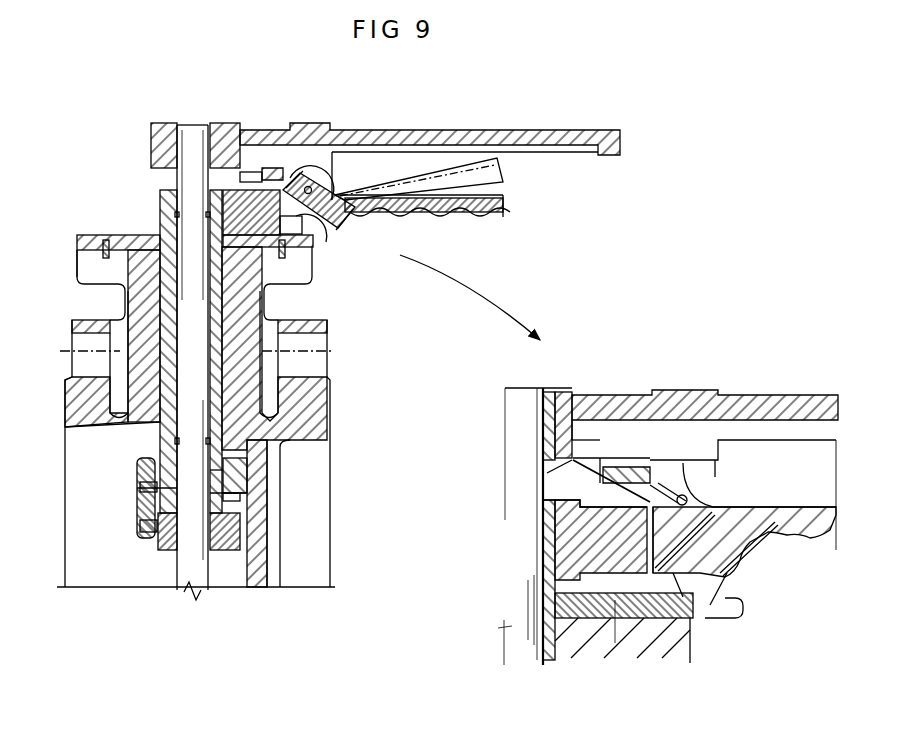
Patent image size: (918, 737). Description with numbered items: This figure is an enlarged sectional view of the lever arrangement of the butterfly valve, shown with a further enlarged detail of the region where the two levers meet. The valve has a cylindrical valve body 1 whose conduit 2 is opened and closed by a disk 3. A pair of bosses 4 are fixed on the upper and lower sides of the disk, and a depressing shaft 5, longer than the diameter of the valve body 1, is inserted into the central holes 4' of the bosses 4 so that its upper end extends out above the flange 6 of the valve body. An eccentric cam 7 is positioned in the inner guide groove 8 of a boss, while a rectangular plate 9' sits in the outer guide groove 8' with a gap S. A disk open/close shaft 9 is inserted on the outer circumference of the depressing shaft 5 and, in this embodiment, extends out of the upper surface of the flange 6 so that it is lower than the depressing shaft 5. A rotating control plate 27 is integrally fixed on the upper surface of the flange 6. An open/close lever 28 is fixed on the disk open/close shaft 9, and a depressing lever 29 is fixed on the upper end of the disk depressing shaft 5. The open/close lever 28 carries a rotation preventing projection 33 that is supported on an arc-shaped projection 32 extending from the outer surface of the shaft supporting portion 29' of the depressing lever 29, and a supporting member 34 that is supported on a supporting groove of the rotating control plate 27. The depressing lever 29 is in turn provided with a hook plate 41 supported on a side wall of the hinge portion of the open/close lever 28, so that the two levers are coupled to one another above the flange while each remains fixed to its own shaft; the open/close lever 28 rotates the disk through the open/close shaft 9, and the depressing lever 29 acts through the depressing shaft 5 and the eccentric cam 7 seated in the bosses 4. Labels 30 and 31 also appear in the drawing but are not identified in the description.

The valve body 1 is at (312, 395).
The conduit 2 is at (272, 512).
The disk 3 is at (258, 575).
The bosses 4 is at (122, 546).
The central holes 4' is at (126, 507).
The depressing shaft 5 is at (186, 596).
The flange 6 is at (82, 264).
The eccentric cam 7 is at (233, 528).
The inner guide grooves 8 is at (146, 550).
The outer guide grooves 8' is at (137, 482).
The disk open/close shaft 9 is at (312, 449).
The rectangular plates 9' is at (101, 502).
The rotating control plate 27 is at (122, 240).
The open/close lever 28 is at (300, 230).
The depressing lever 29 is at (539, 317).
The shaft supporting portion 29' is at (167, 123).
The pivot pin 30 is at (682, 495).
The handle 31 is at (495, 212).
The arc-shaped projection 32 is at (548, 472).
The rotation preventing projection 33 is at (265, 172).
The supporting member 34 is at (722, 608).
The hook plate 41 is at (720, 472).
The gap S is at (242, 490).